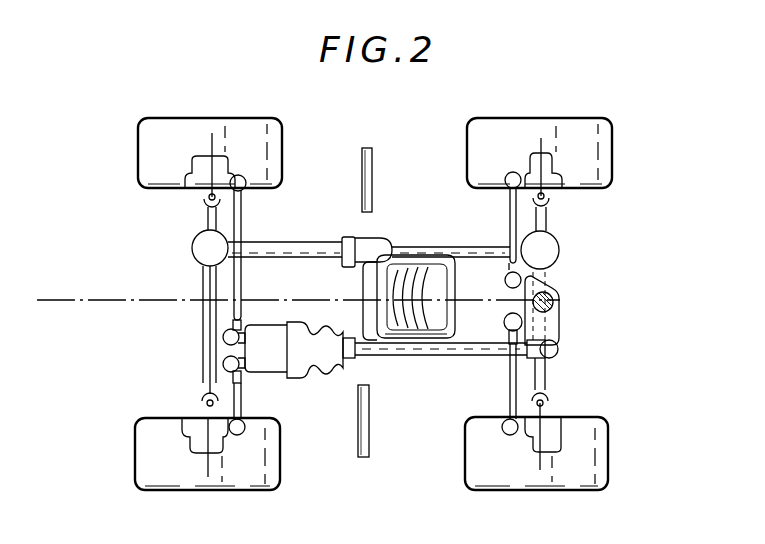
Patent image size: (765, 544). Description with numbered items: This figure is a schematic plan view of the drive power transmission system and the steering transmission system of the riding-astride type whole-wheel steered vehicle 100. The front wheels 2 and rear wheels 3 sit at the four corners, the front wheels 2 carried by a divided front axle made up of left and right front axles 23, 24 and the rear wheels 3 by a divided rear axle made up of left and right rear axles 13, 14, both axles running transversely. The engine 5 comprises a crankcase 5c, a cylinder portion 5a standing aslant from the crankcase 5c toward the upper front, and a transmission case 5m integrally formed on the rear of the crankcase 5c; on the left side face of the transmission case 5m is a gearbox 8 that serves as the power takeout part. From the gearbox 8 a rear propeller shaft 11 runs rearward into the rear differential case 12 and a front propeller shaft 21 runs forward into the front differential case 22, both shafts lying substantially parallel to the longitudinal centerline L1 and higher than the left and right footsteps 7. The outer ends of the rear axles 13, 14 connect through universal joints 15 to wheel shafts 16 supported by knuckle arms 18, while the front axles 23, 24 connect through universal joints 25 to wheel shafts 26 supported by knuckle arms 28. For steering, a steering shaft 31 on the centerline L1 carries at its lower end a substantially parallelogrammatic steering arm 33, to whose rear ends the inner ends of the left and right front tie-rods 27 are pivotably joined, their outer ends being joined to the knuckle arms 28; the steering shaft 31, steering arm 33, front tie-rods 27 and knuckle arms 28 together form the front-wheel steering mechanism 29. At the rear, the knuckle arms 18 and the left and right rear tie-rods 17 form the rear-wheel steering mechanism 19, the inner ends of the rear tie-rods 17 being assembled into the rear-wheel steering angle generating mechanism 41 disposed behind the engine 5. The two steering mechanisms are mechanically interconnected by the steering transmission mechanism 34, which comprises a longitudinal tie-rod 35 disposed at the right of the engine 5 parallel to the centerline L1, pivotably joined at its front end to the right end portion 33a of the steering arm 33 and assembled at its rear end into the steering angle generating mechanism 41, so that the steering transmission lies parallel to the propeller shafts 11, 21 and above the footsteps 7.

The riding-astride type whole-wheel steered vehicle 100 is at (636, 127).
The front wheel 2 is at (595, 123).
The rear wheel 3 is at (157, 124).
The engine 5 is at (415, 250).
The cylinder portion 5a is at (445, 308).
The crankcase 5c is at (420, 342).
The transmission case 5m is at (362, 296).
The footstep 7 is at (368, 147).
The gearbox 8 is at (372, 243).
The rear propeller shaft 11 is at (313, 246).
The rear differential case 12 is at (198, 256).
The rear axle 13 is at (201, 222).
The rear axle 14 is at (206, 347).
The universal joint 15 is at (202, 203).
The wheel shaft 16 is at (205, 198).
The rear tie-rod 17 is at (244, 222).
The knuckle arm 18 is at (197, 170).
The rear-wheel steering mechanism 19 is at (198, 315).
The front propeller shaft 21 is at (460, 250).
The front differential case 22 is at (565, 252).
The front axle 23 is at (552, 215).
The front axle 24 is at (548, 372).
The universal joint 25 is at (550, 198).
The wheel shaft 26 is at (545, 183).
The front tie-rod 27 is at (548, 230).
The knuckle arm 28 is at (527, 165).
The front-wheel steering mechanism 29 is at (566, 332).
The steering shaft 31 is at (553, 302).
The steering arm 33 is at (552, 292).
The right end portion of steering arm 33a is at (558, 340).
The steering transmission mechanism 34 is at (354, 362).
The longitudinal tie-rod 35 is at (445, 357).
The rear-wheel steering angle generating mechanism 41 is at (281, 324).
The longitudinal centerline L1 is at (57, 301).